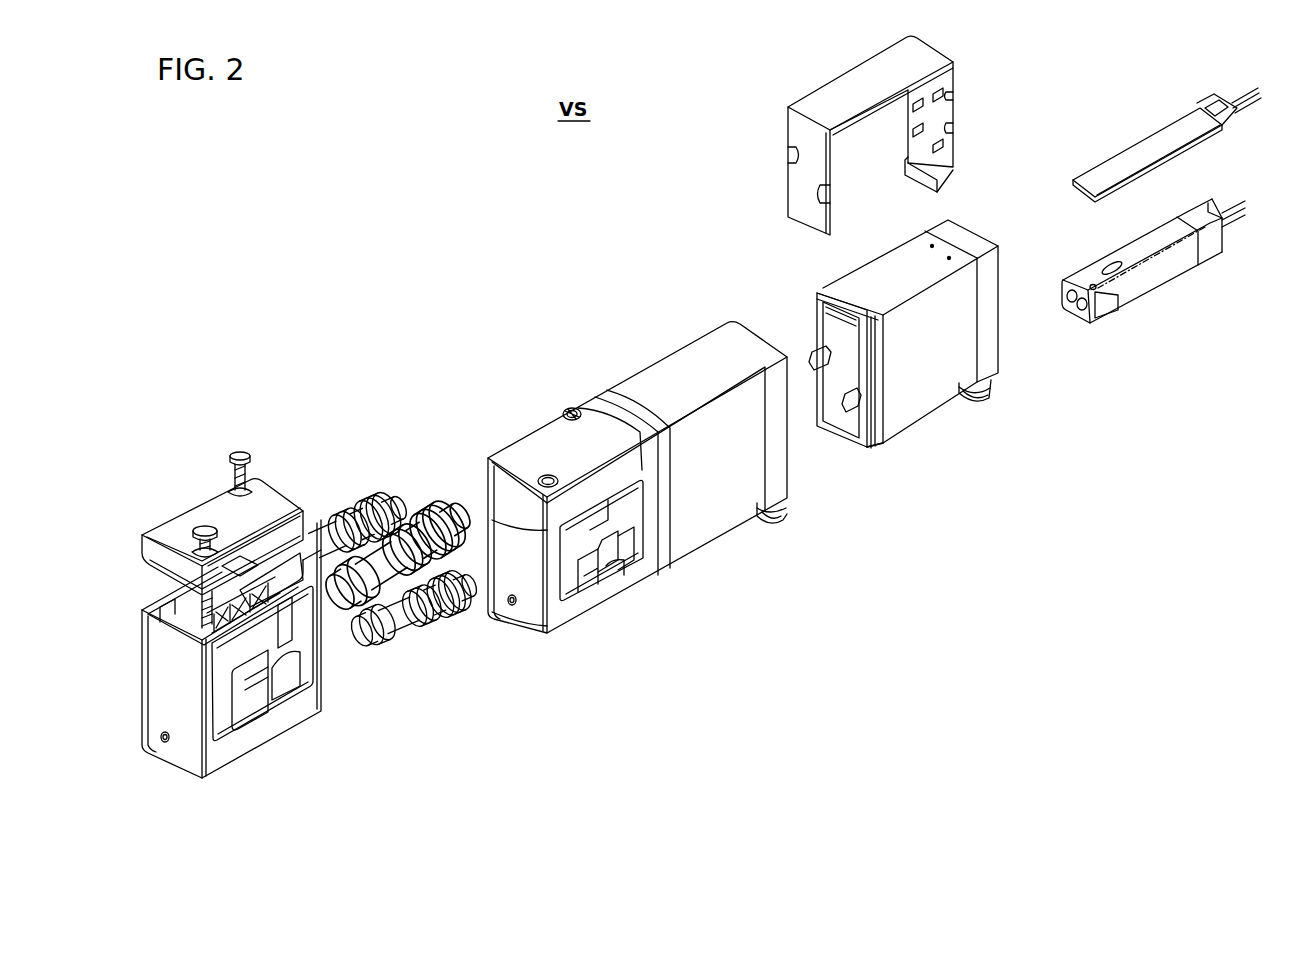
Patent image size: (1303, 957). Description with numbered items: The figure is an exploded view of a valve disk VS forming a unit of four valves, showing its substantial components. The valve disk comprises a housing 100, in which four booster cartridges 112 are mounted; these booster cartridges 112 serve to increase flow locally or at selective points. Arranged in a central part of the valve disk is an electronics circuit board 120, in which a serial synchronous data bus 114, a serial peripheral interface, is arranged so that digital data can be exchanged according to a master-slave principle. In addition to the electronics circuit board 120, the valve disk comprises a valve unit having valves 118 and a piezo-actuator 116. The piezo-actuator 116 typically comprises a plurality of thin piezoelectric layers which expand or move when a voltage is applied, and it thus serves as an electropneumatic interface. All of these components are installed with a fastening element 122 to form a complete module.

The housing 100 is at (188, 504).
The booster cartridges 112 is at (380, 492).
The serial synchronous data bus (serial peripheral interface, SPI) 114 is at (758, 531).
The piezo-actuator 116 is at (1150, 148).
The valves 118 is at (1155, 270).
The electronics circuit board 120 is at (897, 242).
The fastening element 122 is at (632, 368).